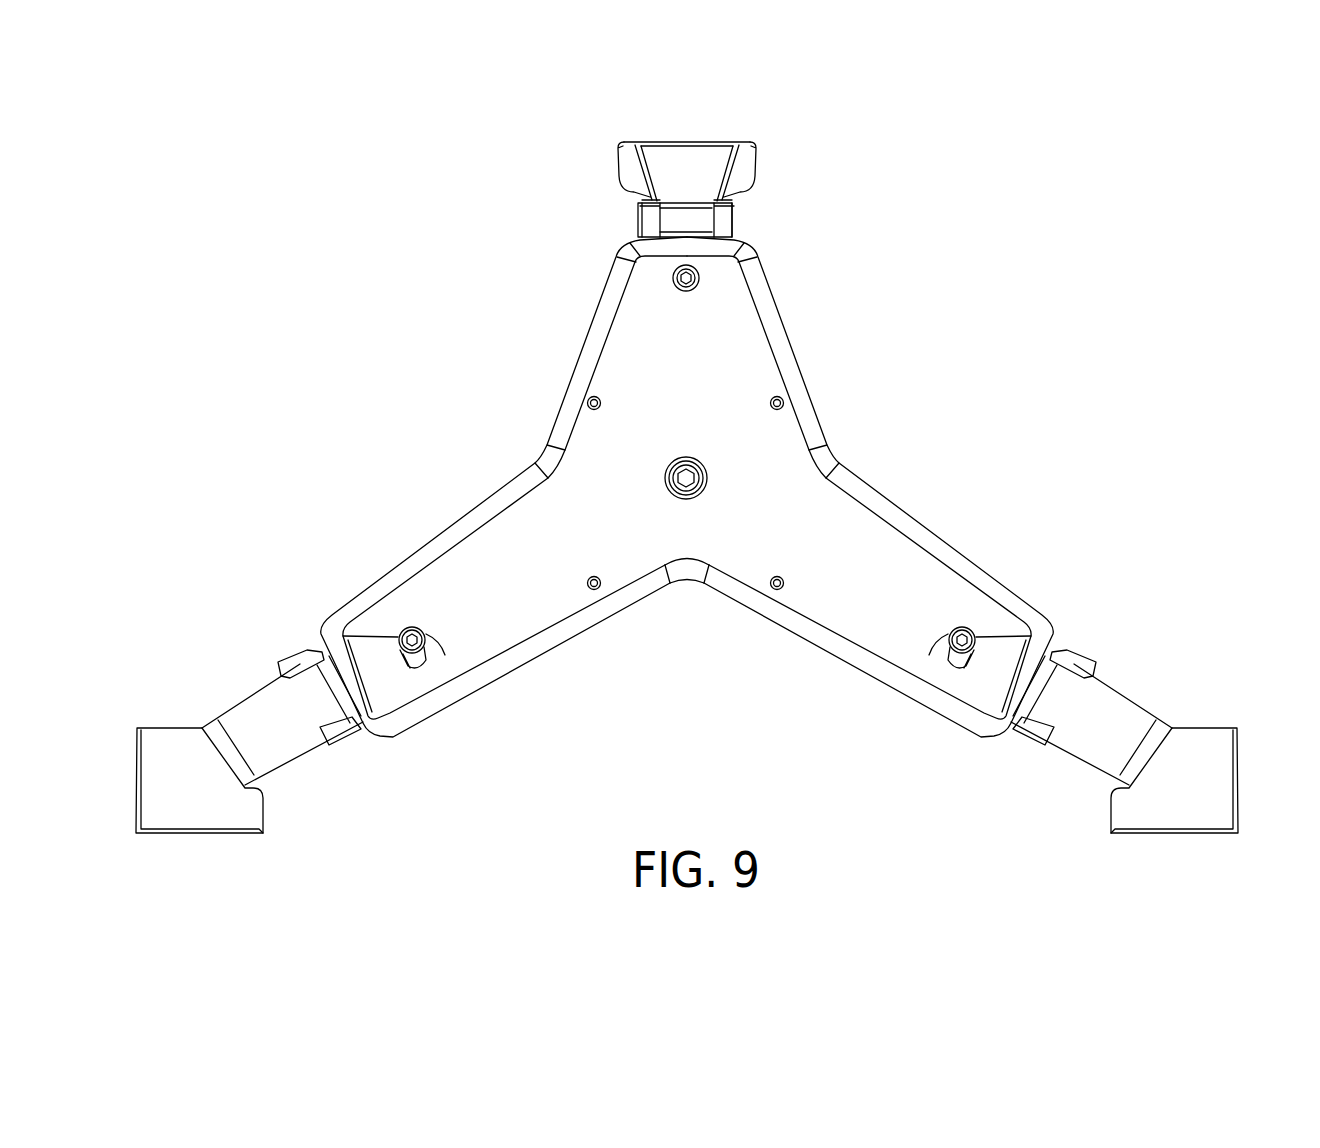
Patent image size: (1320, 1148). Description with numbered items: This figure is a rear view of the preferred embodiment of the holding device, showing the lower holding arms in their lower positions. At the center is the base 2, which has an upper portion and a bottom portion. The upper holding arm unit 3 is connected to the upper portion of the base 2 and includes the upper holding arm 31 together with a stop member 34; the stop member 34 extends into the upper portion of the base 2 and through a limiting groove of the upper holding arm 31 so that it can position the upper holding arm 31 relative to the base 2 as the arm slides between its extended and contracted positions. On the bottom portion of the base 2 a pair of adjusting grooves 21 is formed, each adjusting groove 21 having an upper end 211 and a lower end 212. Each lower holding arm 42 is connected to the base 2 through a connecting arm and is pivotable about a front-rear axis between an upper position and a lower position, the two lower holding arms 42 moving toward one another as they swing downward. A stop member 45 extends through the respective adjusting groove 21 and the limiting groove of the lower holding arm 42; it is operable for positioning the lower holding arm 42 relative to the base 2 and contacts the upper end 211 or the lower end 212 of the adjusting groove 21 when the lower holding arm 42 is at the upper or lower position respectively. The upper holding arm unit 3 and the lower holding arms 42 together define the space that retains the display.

The base 2 is at (875, 465).
The adjusting groove 21 is at (366, 640).
The upper end of adjusting groove 211 is at (410, 627).
The lower end of adjusting groove 212 is at (420, 664).
The upper holding arm unit 3 is at (762, 147).
The upper holding arm 31 is at (727, 220).
The stop member 34 is at (700, 278).
The lower holding arm 42 is at (340, 746).
The stop member 45 is at (428, 636).